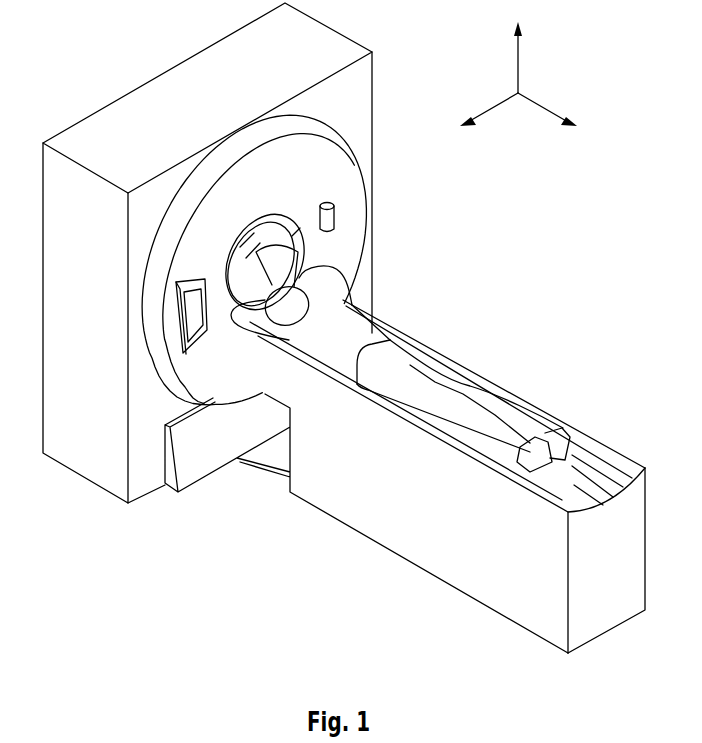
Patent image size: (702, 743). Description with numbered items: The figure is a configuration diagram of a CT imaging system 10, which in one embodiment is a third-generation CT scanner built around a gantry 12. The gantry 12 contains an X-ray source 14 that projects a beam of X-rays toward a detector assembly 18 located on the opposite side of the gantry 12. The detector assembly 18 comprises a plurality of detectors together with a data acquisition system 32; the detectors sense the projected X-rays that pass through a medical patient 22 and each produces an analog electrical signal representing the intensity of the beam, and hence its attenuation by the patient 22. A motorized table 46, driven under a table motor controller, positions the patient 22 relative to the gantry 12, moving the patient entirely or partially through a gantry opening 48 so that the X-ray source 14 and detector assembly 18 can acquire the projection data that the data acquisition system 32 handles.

The CT imaging system 10 is at (495, 212).
The gantry 12 is at (305, 328).
The X-ray source 14 is at (330, 223).
The detector assembly 18 is at (198, 347).
The medical patient 22 is at (375, 318).
The data acquisition system (DAS) 32 is at (190, 280).
The motorized table 46 is at (483, 590).
The gantry opening 48 is at (268, 220).